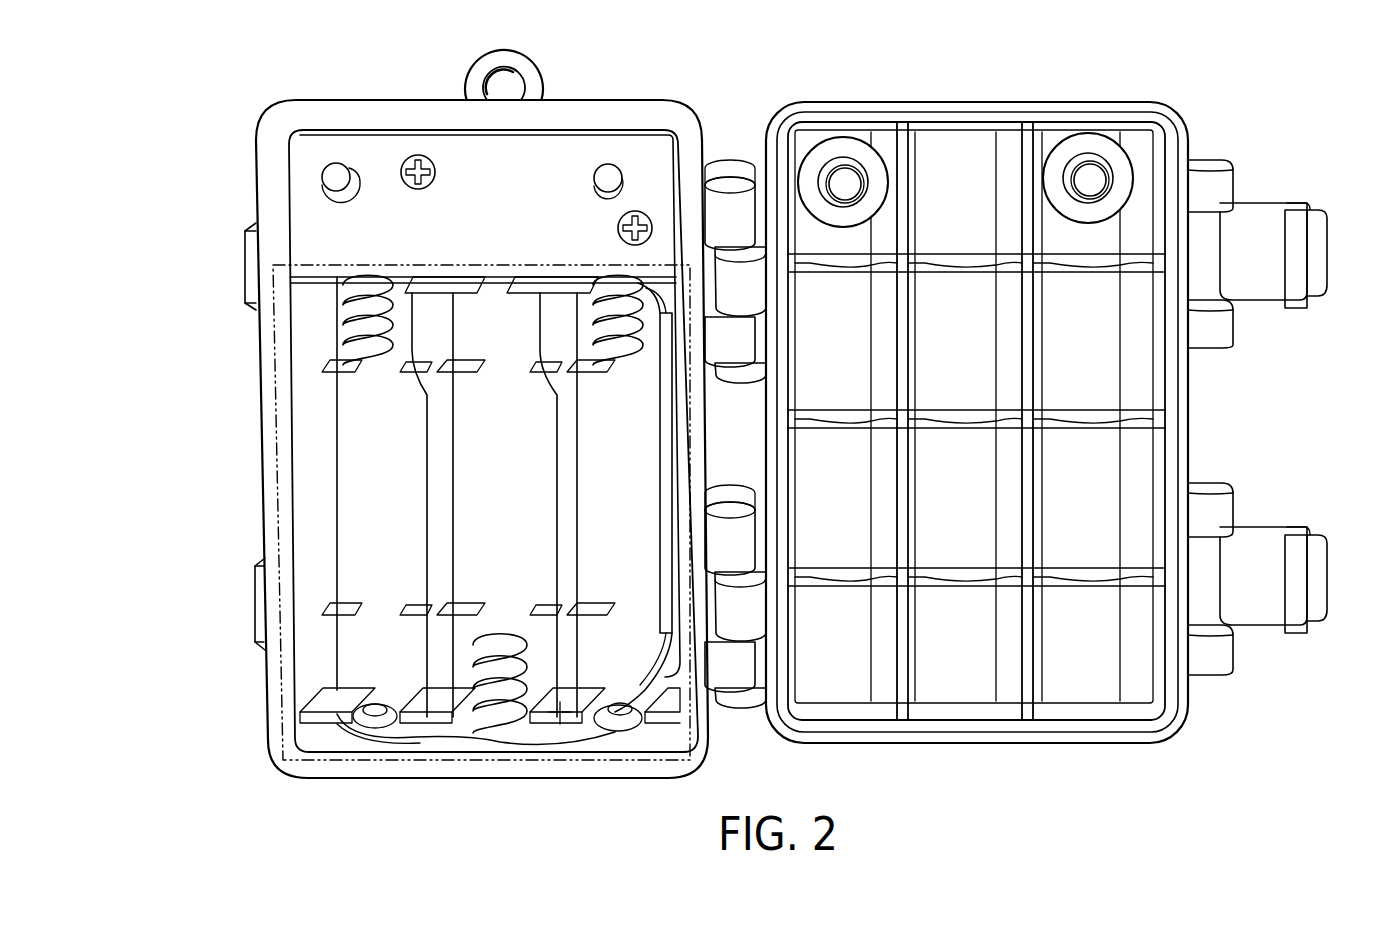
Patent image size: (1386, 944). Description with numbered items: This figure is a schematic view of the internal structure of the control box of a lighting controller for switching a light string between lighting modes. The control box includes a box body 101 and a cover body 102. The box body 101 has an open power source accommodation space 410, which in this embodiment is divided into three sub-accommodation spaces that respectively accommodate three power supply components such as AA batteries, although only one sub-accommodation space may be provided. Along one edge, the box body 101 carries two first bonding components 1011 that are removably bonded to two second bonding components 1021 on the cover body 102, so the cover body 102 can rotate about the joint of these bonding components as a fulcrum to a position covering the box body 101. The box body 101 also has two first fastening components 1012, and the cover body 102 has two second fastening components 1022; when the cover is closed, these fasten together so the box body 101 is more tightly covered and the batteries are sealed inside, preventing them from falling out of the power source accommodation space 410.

The box body 101 is at (565, 155).
The first bonding component 1011 is at (725, 222).
The first fastening component 1012 is at (247, 270).
The power source accommodation space 410 is at (280, 418).
The cover body 102 is at (1083, 112).
The second bonding component 1021 is at (737, 285).
The second fastening component 1022 is at (1268, 222).